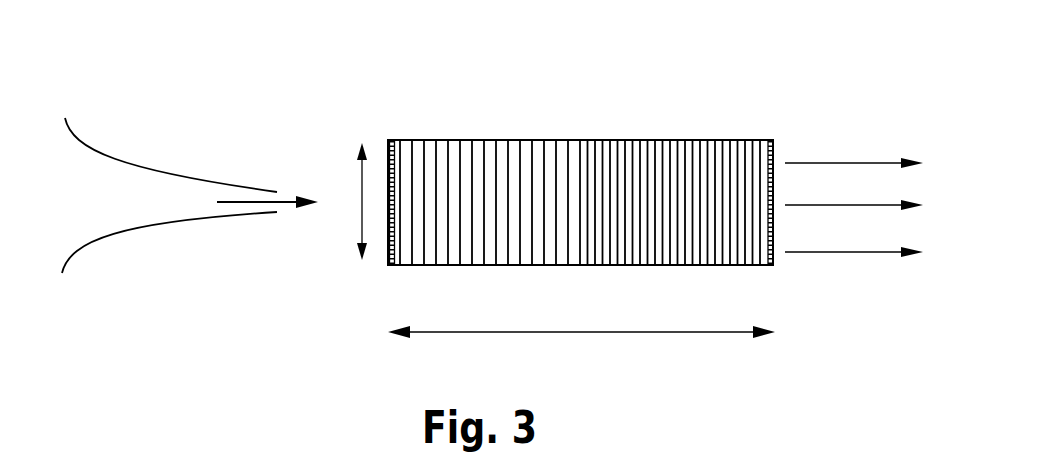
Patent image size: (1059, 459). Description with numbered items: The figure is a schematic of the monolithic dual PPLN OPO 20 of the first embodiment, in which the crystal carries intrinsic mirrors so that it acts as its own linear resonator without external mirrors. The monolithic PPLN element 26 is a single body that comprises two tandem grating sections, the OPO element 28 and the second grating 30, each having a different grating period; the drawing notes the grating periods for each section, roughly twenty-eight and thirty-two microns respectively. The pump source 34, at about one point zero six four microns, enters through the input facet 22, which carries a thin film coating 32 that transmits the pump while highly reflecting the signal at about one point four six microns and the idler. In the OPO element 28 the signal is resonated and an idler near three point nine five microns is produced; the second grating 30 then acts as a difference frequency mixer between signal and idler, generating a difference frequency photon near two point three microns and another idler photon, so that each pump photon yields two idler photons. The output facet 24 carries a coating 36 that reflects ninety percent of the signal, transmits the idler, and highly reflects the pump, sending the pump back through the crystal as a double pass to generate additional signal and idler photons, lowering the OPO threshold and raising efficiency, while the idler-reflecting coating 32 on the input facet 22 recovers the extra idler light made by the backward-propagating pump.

The monolithic dual PPLN OPO 20 is at (568, 68).
The input facet 22 is at (392, 266).
The output facet 24 is at (768, 268).
The monolithic PPLN element 26 is at (581, 145).
The OPO element 28 is at (500, 145).
The second grating 30 is at (676, 145).
The thin film coating 32 is at (388, 265).
The pump source 34 is at (205, 181).
The coating 36 is at (774, 264).